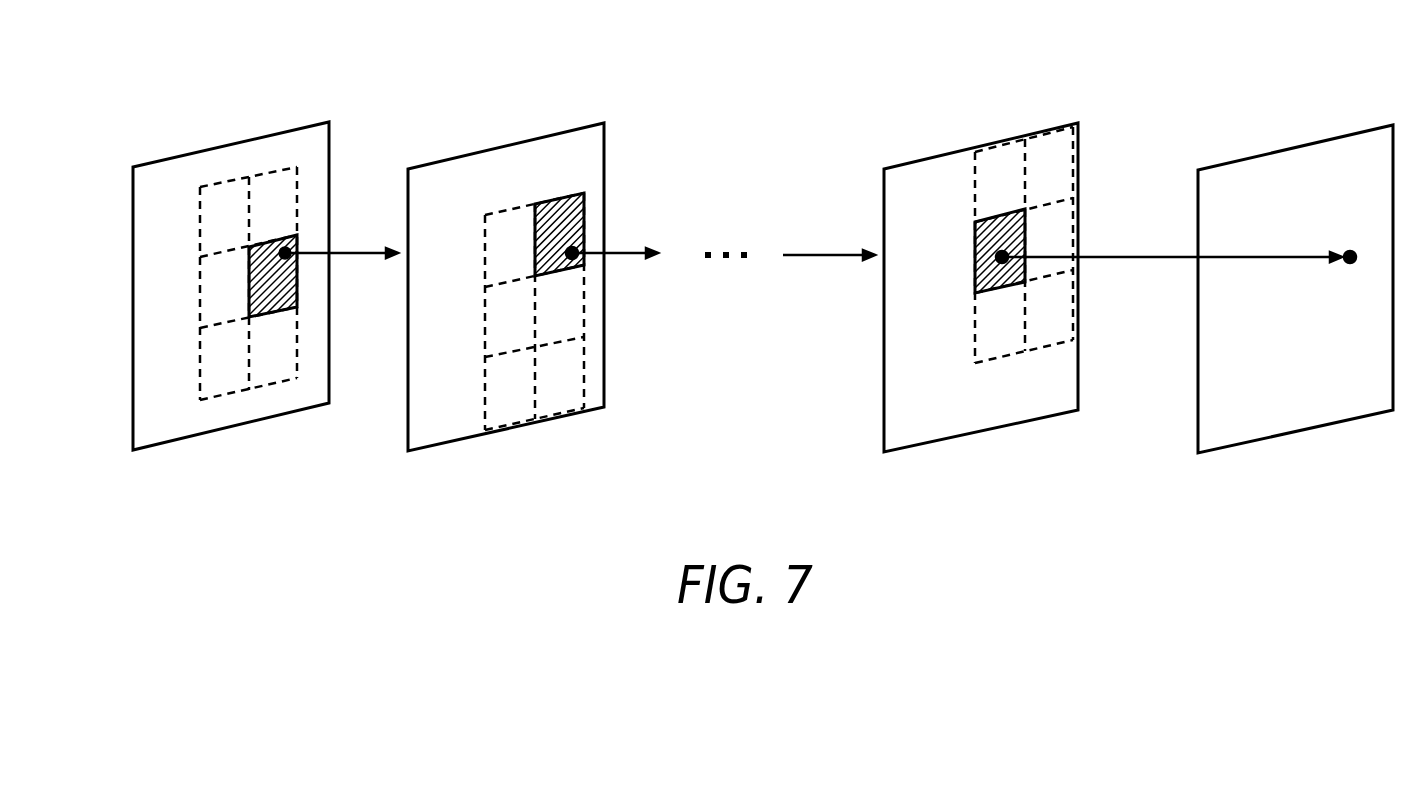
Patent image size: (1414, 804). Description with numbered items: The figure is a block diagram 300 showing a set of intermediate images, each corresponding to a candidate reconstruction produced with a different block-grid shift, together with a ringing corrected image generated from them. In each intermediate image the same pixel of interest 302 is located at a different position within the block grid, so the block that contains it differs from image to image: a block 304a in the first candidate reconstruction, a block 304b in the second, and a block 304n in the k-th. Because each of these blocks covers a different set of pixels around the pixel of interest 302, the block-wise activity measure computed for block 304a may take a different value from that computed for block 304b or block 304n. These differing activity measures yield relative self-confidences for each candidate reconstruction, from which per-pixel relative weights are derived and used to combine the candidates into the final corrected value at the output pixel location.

The block diagram 300 is at (764, 31).
The pixel of interest 302 is at (248, 256).
The block 304a is at (275, 240).
The block 304b is at (562, 197).
The block 304n is at (1015, 210).